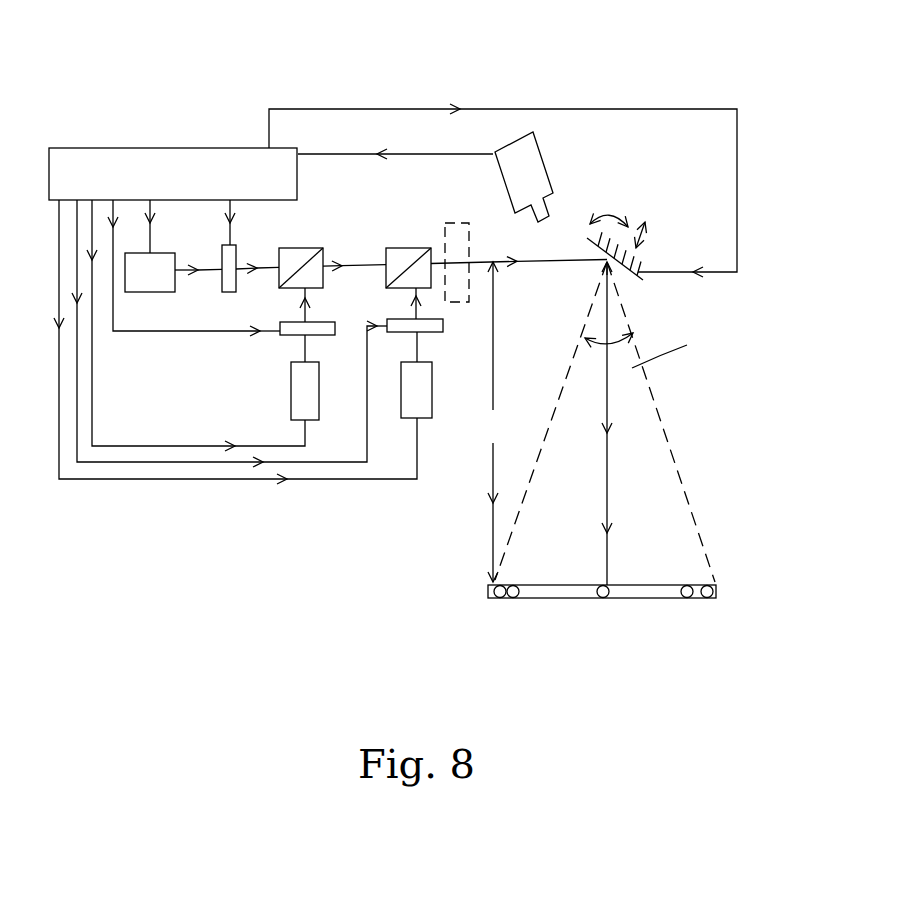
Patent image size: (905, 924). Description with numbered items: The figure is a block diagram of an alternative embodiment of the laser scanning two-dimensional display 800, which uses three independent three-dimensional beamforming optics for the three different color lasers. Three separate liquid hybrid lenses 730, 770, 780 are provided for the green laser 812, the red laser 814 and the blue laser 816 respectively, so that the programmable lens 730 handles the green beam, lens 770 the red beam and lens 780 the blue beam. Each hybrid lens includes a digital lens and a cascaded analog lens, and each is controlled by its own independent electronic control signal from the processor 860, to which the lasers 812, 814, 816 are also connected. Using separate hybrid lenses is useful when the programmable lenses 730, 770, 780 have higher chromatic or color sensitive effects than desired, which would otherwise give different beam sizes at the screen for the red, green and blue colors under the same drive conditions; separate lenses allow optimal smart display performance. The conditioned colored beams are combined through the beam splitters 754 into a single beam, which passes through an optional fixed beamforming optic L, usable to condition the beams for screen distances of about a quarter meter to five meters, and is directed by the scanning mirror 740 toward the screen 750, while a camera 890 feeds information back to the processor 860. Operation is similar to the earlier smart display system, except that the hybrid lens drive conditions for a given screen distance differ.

The laser scanning 2-D display 800 is at (283, 60).
The processor 860 is at (98, 152).
The green laser 812 is at (164, 291).
The red laser 814 is at (296, 374).
The blue laser 816 is at (433, 400).
The liquid hybrid lens 730 is at (232, 292).
The liquid hybrid lens 770 is at (314, 322).
The liquid hybrid lens 780 is at (434, 329).
The beam splitter 754 is at (323, 248).
The scanning mirror 740 is at (632, 277).
The screen with detectors 750 is at (622, 593).
The camera 890 is at (523, 142).